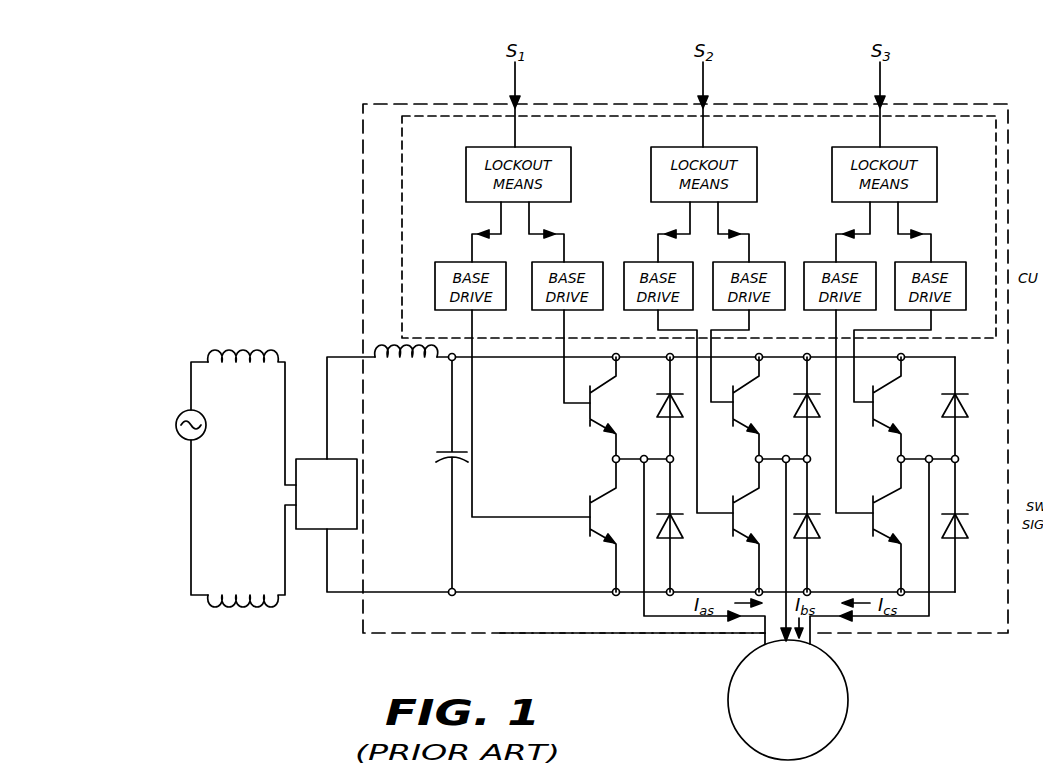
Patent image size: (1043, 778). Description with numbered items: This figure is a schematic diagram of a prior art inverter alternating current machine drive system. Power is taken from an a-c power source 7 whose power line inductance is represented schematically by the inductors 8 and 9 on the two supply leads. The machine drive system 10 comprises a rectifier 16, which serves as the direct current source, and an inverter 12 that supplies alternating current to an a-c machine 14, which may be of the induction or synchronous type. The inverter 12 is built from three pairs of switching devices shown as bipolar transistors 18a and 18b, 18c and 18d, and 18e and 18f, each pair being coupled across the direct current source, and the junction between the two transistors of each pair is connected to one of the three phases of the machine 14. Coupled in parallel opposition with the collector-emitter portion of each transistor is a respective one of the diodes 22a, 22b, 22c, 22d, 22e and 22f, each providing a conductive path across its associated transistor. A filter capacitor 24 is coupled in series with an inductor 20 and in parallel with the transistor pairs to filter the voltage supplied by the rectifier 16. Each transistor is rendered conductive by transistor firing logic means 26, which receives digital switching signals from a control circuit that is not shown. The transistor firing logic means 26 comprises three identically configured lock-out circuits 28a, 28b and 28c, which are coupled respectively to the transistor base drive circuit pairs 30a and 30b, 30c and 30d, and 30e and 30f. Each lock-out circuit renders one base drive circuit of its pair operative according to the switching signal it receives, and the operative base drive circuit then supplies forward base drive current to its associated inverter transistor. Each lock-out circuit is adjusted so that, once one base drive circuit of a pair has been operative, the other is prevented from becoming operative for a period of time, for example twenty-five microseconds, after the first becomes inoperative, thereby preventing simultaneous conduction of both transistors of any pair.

The a-c power source 7 is at (207, 417).
The inductor 8 is at (250, 352).
The inductor 9 is at (247, 607).
The machine drive system 10 is at (608, 657).
The inverter 12 is at (993, 101).
The a-c machine 14 is at (788, 700).
The rectifier 16 is at (318, 522).
The bipolar transistor 18a is at (590, 409).
The bipolar transistor 18b is at (590, 519).
The bipolar transistor 18c is at (733, 409).
The bipolar transistor 18d is at (733, 519).
The bipolar transistor 18e is at (873, 409).
The bipolar transistor 18f is at (873, 519).
The inductor 20 is at (410, 368).
The diode 22a is at (660, 395).
The diode 22b is at (683, 538).
The diode 22c is at (799, 395).
The diode 22d is at (820, 538).
The diode 22e is at (947, 395).
The diode 22f is at (968, 538).
The filter capacitor 24 is at (448, 451).
The transistor firing logic means 26 is at (436, 333).
The lock-out circuit 28a is at (571, 175).
The lock-out circuit 28b is at (757, 175).
The lock-out circuit 28c is at (937, 172).
The transistor base drive circuit 30a is at (565, 262).
The transistor base drive circuit 30b is at (454, 262).
The transistor base drive circuit 30c is at (754, 262).
The transistor base drive circuit 30d is at (637, 262).
The transistor base drive circuit 30e is at (939, 262).
The transistor base drive circuit 30f is at (813, 262).